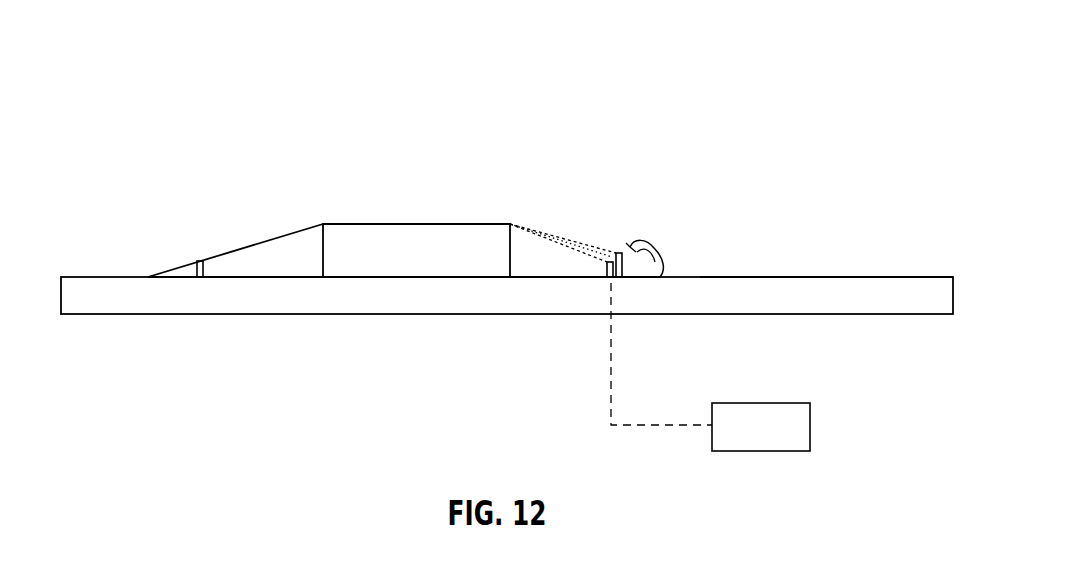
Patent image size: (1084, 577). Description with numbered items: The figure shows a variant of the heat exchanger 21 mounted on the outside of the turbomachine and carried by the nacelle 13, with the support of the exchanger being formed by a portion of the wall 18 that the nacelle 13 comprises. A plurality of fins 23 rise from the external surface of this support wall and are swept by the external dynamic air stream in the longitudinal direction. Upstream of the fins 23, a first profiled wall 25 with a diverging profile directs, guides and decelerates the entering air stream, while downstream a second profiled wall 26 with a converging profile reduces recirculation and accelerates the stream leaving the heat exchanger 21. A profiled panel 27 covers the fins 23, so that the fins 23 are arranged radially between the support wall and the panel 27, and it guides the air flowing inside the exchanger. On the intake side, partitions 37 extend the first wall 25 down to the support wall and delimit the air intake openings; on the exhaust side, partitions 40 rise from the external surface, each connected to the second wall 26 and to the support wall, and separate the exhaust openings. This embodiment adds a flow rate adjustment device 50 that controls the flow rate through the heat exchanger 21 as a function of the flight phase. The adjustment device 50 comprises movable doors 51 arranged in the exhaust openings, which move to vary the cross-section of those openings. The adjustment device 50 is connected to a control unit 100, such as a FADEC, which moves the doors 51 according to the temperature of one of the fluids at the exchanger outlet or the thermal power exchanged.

The nacelle 13 is at (883, 280).
The wall 18 is at (795, 283).
The heat exchanger 21 is at (509, 199).
The fins 23 is at (350, 247).
The first profiled wall 25 is at (247, 230).
The second profiled wall 26 is at (611, 261).
The profiled panel 27 is at (428, 224).
The partitions 37 is at (175, 272).
The partition 40 is at (633, 247).
The flow rate adjustment device 50 is at (608, 279).
The movable doors 51 is at (613, 279).
The control unit 100 is at (761, 427).